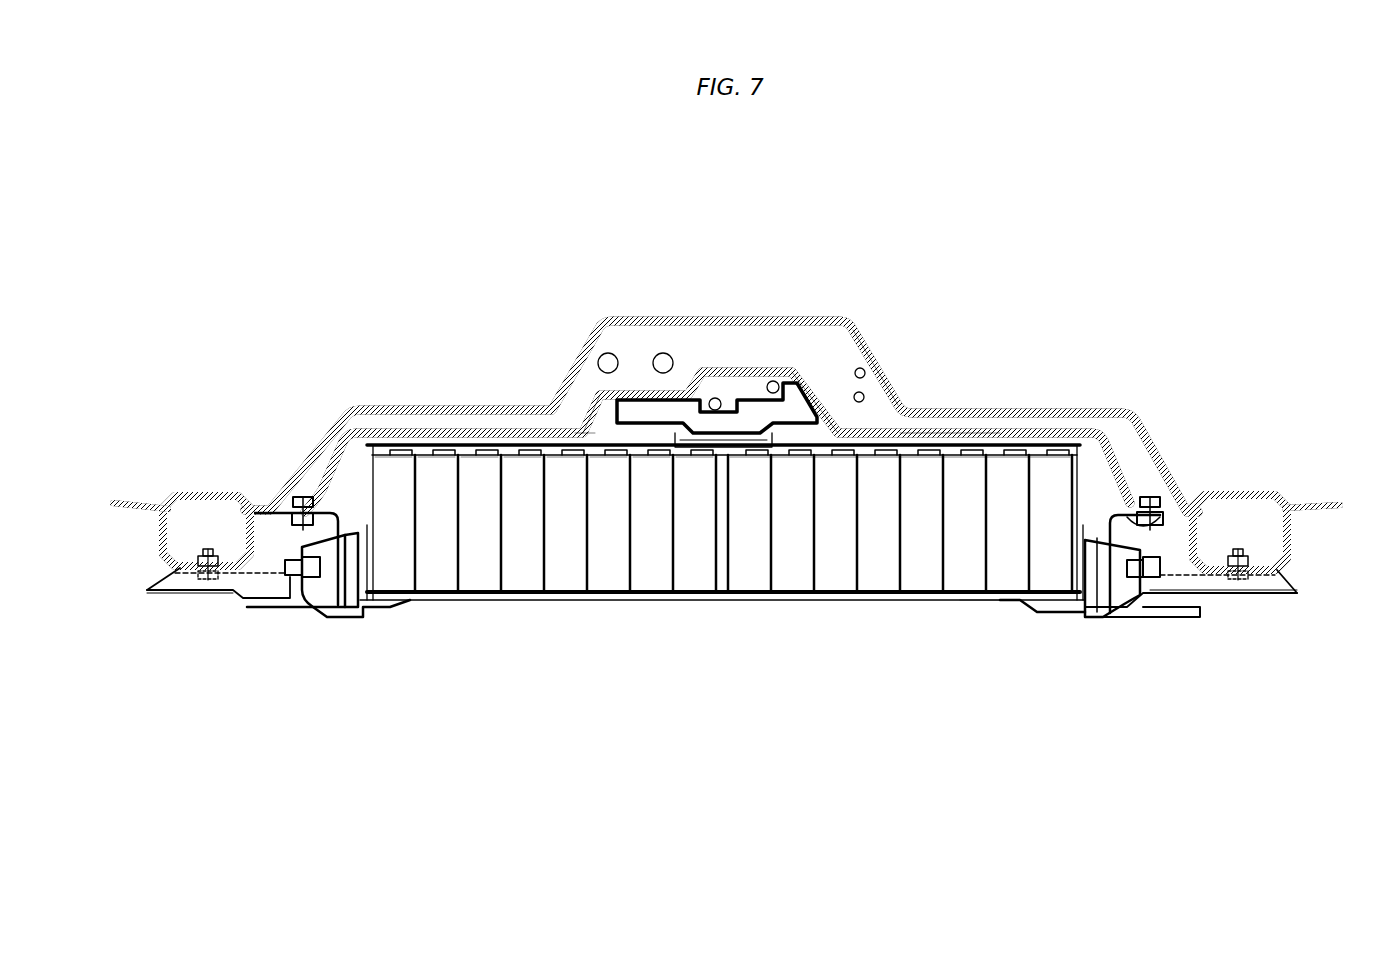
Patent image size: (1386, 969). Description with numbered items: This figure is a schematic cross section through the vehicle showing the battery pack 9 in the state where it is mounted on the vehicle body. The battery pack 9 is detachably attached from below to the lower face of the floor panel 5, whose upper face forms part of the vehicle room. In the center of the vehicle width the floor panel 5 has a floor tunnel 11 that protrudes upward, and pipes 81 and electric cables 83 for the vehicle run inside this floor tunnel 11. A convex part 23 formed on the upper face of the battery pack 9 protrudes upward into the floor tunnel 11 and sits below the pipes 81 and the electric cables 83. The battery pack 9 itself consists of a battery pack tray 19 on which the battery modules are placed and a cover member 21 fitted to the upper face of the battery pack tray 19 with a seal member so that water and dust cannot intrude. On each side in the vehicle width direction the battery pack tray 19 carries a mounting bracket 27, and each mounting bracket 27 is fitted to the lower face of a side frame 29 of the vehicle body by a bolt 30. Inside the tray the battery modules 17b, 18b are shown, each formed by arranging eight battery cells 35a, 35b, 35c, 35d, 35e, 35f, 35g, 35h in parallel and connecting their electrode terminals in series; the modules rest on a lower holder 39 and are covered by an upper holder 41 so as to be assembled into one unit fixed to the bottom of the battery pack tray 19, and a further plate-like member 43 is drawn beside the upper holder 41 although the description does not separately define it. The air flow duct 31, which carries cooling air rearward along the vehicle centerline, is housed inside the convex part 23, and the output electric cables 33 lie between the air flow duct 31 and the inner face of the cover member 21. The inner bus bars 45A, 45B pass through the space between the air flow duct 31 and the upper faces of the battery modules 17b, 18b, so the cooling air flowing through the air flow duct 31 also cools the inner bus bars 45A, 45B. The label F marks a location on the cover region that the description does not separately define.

The floor panel 5 is at (1147, 428).
The battery pack 9 is at (977, 650).
The floor tunnel 11 is at (882, 340).
The battery module 17b is at (790, 578).
The battery module 18b is at (713, 577).
The battery pack tray 19 is at (1168, 512).
The cover member 21 is at (1130, 466).
The convex part 23 is at (836, 398).
The mounting bracket 27 is at (192, 598).
The side frame 29 is at (162, 540).
The bolt 30 is at (209, 548).
The air flow duct 31 is at (714, 397).
The output electric cable 33 is at (736, 400).
The battery cell 35a is at (397, 600).
The battery cell 35b is at (440, 600).
The battery cell 35c is at (483, 600).
The battery cell 35d is at (526, 600).
The battery cell 35e is at (569, 600).
The battery cell 35f is at (612, 600).
The battery cell 35g is at (655, 600).
The battery cell 35h is at (710, 561).
The lower holder 39 is at (1085, 520).
The upper holder 41 is at (993, 440).
The heat insulating plate 43 is at (419, 447).
The inner bus bar 45A is at (838, 436).
The inner bus bar 45B is at (592, 400).
The pipe 81 is at (608, 352).
The electric cable 83 is at (858, 367).
The fastening portion F is at (585, 430).